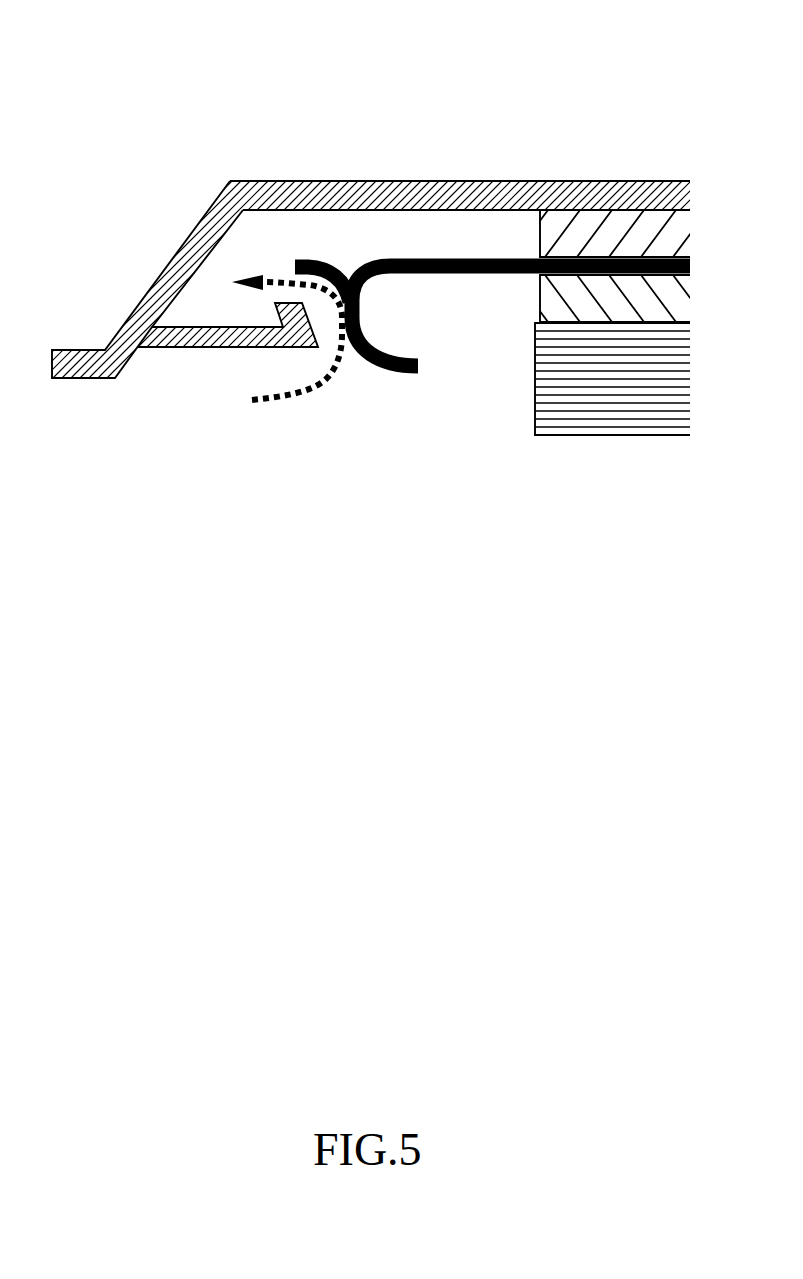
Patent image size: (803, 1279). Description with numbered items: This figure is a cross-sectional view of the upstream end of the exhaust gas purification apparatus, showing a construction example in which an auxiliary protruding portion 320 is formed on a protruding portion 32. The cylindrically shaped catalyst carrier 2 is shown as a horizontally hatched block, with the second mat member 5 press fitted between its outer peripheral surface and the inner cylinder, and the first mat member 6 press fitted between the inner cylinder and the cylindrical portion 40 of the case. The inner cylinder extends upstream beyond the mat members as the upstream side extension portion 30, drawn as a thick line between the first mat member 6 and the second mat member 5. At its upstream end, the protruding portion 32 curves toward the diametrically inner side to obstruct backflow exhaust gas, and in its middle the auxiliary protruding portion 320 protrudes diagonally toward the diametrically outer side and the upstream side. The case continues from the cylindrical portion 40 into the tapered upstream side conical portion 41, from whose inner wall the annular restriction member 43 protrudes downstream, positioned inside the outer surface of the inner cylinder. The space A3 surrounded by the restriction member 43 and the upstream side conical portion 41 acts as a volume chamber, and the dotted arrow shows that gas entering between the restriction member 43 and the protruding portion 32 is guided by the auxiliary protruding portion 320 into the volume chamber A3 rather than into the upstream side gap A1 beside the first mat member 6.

The cylindrical portion 40 is at (401, 244).
The upstream side conical portion 41 is at (210, 212).
The restriction member 43 is at (220, 348).
The upstream side extension portion 30 is at (413, 258).
The protruding portion 32 is at (385, 370).
The auxiliary protruding portion 320 is at (310, 259).
The first mat member 6 is at (645, 218).
The second mat member 5 is at (542, 300).
The catalyst carrier 2 is at (645, 405).
The upstream side gap A1 is at (490, 235).
The volume chamber A3 is at (203, 297).